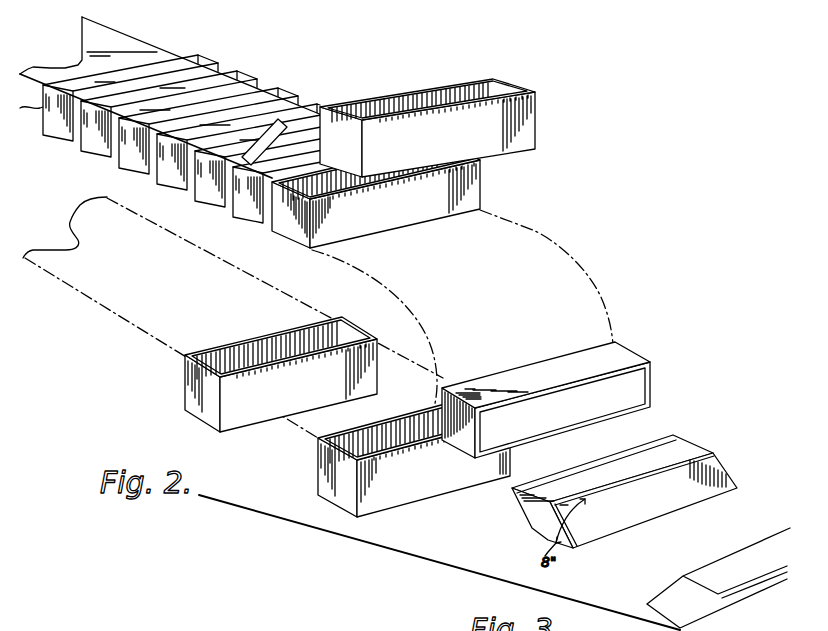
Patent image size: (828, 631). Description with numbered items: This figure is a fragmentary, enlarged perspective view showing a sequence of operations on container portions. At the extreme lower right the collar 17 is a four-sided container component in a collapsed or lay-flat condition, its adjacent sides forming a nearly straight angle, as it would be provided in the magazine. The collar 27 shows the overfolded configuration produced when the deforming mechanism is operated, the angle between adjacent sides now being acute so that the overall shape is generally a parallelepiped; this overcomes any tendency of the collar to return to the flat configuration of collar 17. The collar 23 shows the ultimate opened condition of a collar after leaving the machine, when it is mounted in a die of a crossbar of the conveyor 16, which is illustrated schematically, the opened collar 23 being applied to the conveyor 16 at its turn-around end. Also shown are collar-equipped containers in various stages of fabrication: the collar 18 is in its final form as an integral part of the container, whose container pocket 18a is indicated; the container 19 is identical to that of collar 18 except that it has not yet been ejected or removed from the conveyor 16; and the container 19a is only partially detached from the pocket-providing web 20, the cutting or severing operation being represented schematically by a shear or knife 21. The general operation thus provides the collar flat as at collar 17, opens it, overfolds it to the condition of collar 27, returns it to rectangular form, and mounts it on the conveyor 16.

The pocket-providing web 20 is at (218, 126).
The shear or knife 21 is at (282, 124).
The collar 18 is at (452, 100).
The container pocket 18a is at (503, 85).
The container 19 is at (373, 218).
The container 19a is at (247, 200).
The conveyor 16 is at (543, 230).
The collar 23 is at (197, 395).
The collar configuration 27 is at (714, 455).
The collar 17 is at (658, 602).